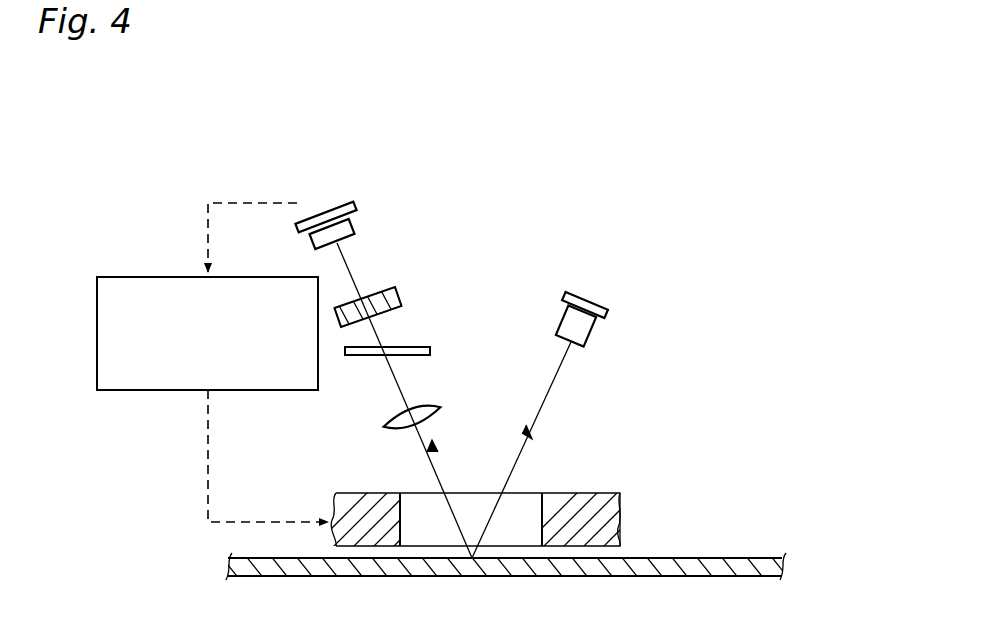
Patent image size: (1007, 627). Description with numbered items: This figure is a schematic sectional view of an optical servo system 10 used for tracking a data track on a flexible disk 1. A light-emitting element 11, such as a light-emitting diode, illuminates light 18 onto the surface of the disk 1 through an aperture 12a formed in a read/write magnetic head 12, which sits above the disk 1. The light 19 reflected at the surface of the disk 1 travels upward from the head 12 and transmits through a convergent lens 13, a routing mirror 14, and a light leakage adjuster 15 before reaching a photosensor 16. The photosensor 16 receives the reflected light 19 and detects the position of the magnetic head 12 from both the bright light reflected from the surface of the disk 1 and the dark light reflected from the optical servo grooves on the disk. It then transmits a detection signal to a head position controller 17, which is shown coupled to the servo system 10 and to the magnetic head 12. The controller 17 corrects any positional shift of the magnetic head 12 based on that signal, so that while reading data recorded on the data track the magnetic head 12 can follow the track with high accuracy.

The flexible disk 1 is at (754, 557).
The optical servo system 10 is at (244, 200).
The light-emitting element 11 is at (592, 328).
The read/write magnetic head 12 is at (344, 493).
The aperture 12a is at (538, 505).
The convergent lens 13 is at (420, 410).
The routing mirror 14 is at (431, 350).
The light leakage adjuster 15 is at (400, 294).
The photosensor 16 is at (356, 222).
The head position controller 17 is at (145, 290).
The light 18 is at (555, 375).
The reflected light 19 is at (396, 390).